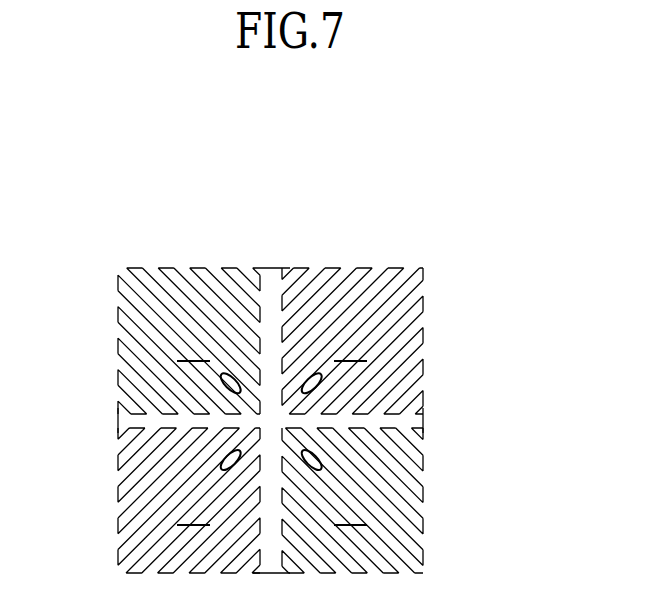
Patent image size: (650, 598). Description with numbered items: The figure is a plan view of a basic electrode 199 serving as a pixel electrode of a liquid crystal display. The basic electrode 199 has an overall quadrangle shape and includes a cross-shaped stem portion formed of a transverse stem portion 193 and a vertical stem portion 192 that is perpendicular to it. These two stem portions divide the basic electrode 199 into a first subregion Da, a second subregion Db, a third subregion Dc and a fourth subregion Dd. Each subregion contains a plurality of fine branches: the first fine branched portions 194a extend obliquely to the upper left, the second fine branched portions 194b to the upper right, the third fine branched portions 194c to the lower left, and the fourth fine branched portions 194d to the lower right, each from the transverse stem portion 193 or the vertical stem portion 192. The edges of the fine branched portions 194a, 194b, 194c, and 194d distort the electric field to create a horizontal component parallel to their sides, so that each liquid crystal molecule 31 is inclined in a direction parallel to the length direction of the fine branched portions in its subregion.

The basic electrode 199 is at (355, 266).
The first fine branched portion 194a is at (205, 300).
The second fine branched portion 194b is at (383, 283).
The third fine branched portion 194c is at (152, 528).
The fourth fine branched portion 194d is at (390, 548).
The vertical stem portion 192 is at (283, 312).
The transverse stem portion 193 is at (307, 430).
The liquid crystal molecule 31 is at (320, 390).